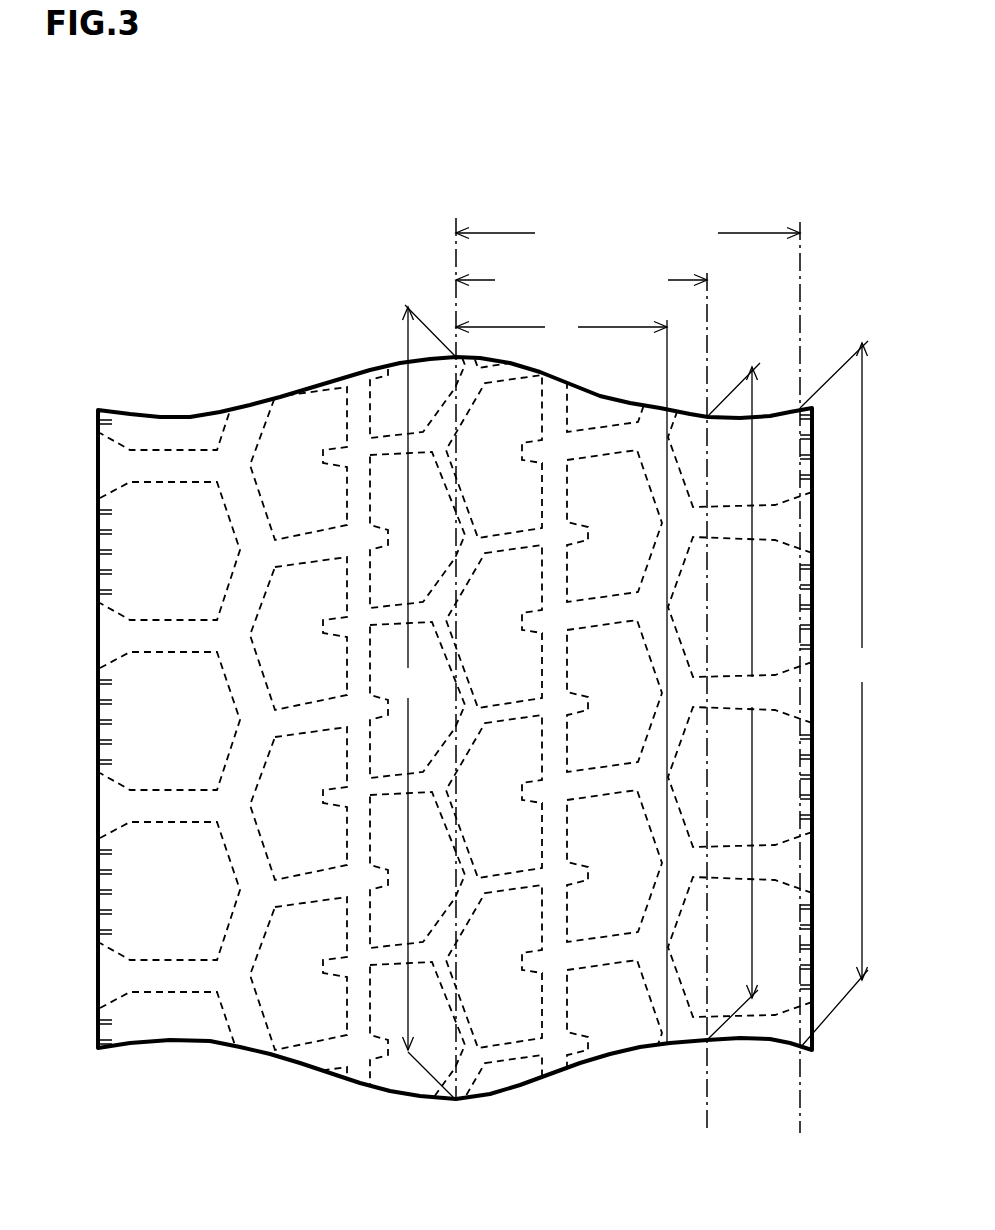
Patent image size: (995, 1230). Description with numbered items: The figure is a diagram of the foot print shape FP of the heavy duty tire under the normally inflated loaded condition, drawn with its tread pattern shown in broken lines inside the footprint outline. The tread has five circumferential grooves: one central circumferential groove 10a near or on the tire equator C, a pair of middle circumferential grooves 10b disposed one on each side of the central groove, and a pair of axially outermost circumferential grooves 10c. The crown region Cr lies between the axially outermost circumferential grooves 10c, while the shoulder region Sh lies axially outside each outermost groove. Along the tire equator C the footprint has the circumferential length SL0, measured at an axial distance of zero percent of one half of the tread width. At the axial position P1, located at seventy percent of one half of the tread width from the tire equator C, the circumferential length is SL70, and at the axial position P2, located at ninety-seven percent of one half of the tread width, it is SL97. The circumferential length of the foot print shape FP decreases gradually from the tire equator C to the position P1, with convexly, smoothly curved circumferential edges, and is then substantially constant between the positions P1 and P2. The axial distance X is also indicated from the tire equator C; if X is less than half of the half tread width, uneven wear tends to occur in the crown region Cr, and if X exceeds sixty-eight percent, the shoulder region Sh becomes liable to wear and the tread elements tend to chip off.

The foot print shape FP is at (236, 308).
The shoulder region Sh is at (157, 395).
The crown region Cr is at (386, 343).
The tire equator C is at (456, 643).
The circumferential length at 0% of TW/2 SL0 is at (420, 702).
The circumferential length at 70% of TW/2 SL70 is at (746, 701).
The circumferential length at 97% of TW/2 SL97 is at (846, 694).
The axial distance X is at (561, 678).
The axial position at 70% of TW/2 P1 is at (589, 717).
The axial position at 97% of TW/2 P2 is at (638, 694).
The central circumferential groove 10a is at (448, 975).
The middle circumferential grooves 10b is at (362, 1010).
The axially outermost circumferential grooves 10c is at (238, 1002).